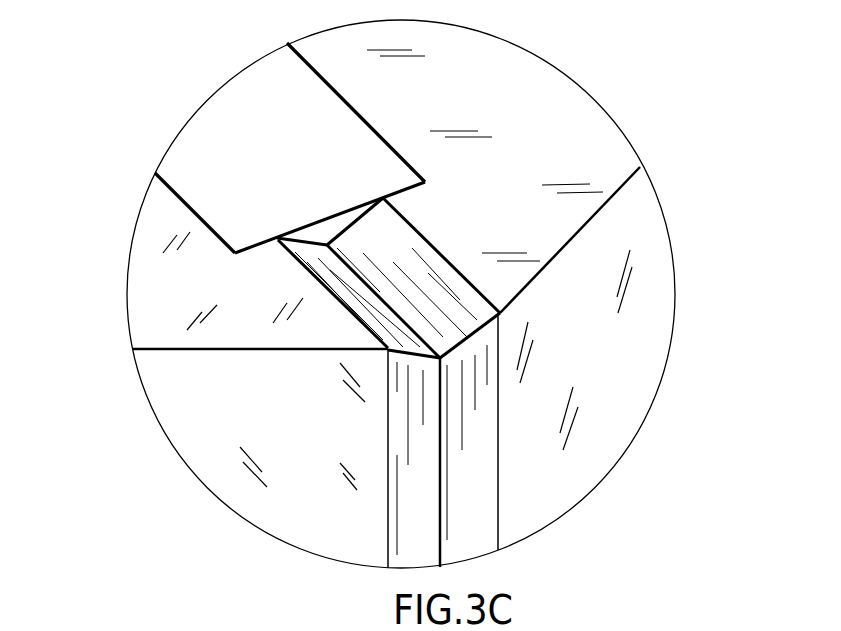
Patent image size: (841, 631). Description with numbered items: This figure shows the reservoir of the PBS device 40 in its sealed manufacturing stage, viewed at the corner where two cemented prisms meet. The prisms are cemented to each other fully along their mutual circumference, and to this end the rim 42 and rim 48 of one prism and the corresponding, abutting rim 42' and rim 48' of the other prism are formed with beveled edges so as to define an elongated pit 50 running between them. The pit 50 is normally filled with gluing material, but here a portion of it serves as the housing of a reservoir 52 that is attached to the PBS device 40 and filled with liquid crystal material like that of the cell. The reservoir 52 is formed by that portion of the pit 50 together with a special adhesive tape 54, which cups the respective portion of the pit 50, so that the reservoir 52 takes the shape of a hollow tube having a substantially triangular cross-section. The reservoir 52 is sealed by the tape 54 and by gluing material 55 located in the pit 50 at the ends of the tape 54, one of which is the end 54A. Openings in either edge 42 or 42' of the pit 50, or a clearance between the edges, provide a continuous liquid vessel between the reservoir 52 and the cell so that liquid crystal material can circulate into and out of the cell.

The PBS device 40 is at (141, 51).
The rim 42 is at (599, 308).
The rim 42' is at (238, 361).
The rim 48 is at (582, 431).
The rim 48' is at (340, 472).
The pit 50 is at (462, 248).
The reservoir 52 is at (392, 111).
The adhesive tape 54 is at (338, 86).
The end of tape 54A is at (388, 199).
The gluing material 55 is at (307, 261).